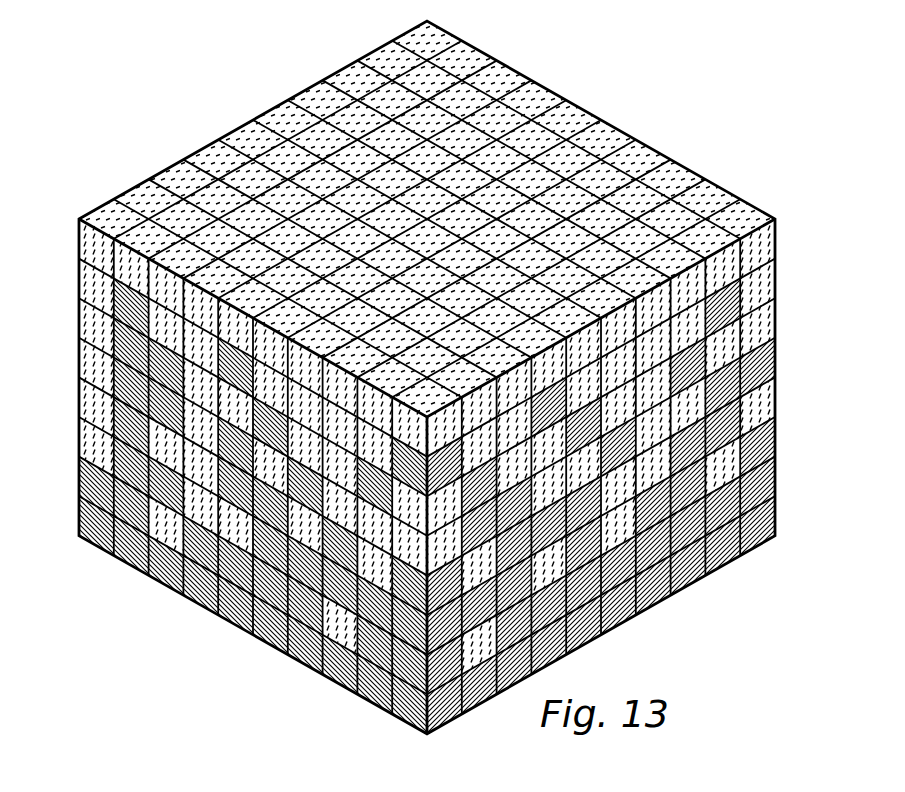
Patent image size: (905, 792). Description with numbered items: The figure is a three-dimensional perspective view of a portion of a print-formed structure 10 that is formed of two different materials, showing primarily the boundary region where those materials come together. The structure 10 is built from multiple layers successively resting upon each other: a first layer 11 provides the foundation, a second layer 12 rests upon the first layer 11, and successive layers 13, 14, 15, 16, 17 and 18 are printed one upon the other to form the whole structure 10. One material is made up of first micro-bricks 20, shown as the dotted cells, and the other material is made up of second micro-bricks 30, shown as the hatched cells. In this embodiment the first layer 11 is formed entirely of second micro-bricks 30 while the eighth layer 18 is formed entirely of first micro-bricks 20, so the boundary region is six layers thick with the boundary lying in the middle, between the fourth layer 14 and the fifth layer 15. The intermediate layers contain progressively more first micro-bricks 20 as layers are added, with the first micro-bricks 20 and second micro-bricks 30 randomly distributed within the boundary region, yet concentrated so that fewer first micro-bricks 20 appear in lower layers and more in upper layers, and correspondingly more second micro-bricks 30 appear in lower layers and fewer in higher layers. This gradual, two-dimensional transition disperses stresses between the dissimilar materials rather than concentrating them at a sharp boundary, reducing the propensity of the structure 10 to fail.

The print-formed structure 10 is at (438, 383).
The first layer 11 is at (79, 516).
The second layer 12 is at (79, 477).
The third layer 13 is at (79, 437).
The fourth layer 14 is at (79, 397).
The fifth layer 15 is at (79, 357).
The sixth layer 16 is at (79, 319).
The seventh layer 17 is at (79, 279).
The eighth layer 18 is at (79, 237).
The first micro-bricks 20 is at (467, 108).
The second micro-bricks 30 is at (236, 376).